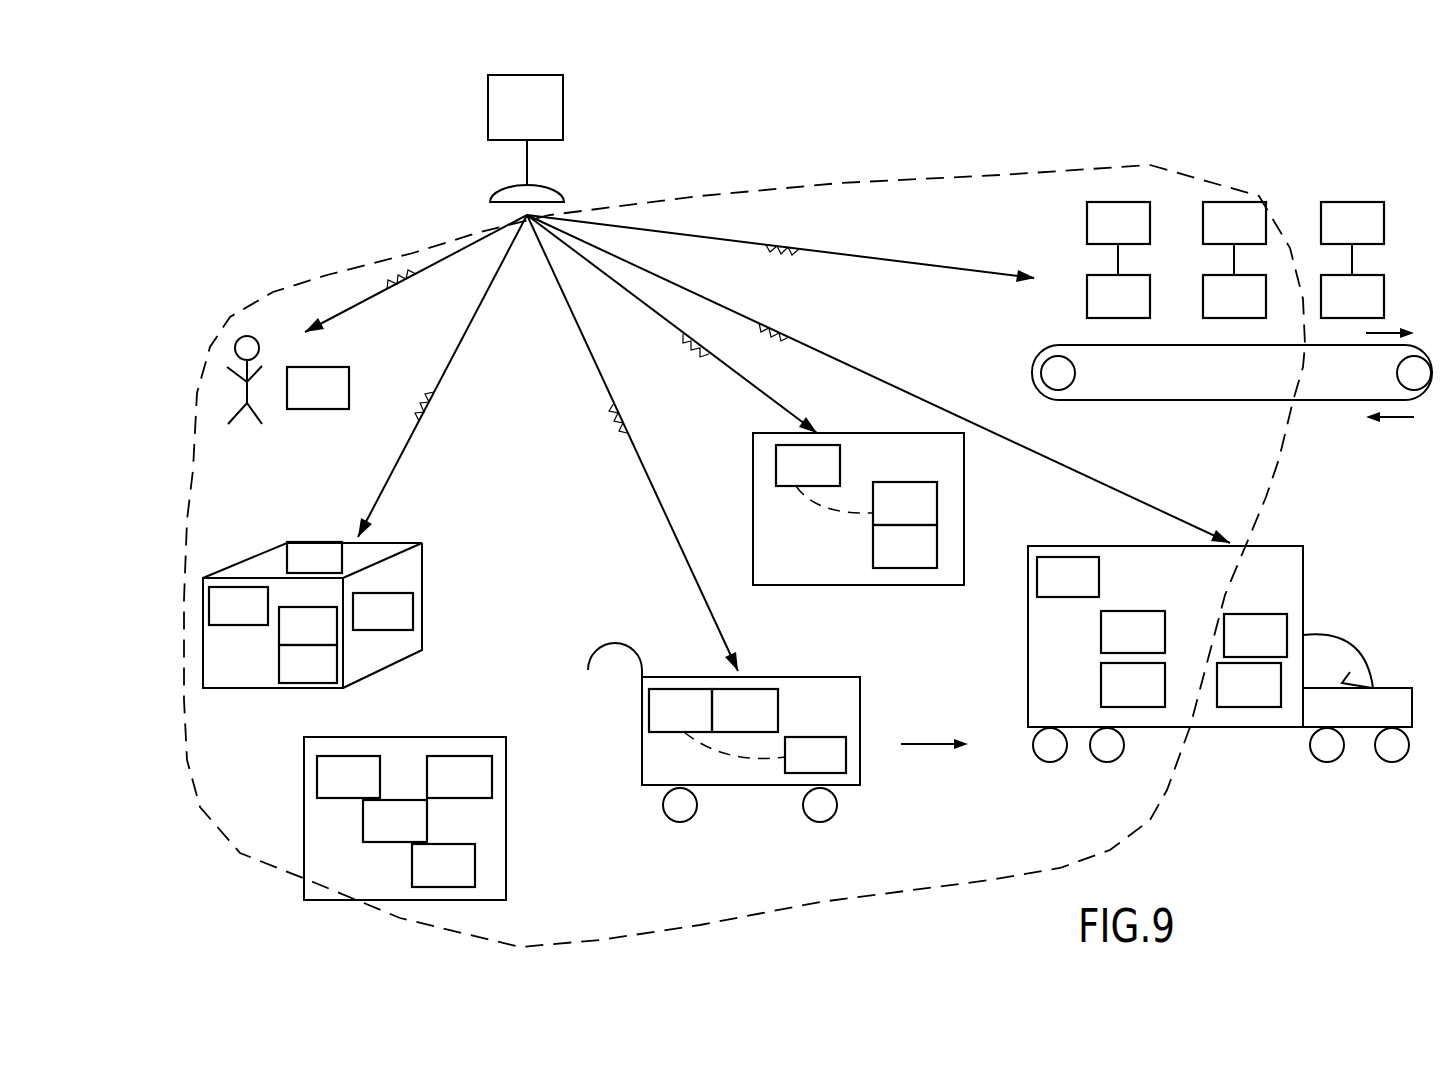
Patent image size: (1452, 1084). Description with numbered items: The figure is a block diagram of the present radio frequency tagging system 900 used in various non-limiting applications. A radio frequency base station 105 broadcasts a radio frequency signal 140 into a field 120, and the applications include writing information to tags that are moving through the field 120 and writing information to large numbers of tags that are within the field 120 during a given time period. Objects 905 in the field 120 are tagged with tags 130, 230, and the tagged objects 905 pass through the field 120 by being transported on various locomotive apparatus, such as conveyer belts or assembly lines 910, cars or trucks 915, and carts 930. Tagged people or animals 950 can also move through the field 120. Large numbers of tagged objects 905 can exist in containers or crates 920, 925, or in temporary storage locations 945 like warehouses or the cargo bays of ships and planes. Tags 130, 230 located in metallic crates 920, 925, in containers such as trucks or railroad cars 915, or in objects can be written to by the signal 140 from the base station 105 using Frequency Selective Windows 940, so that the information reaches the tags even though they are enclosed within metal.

The radio frequency base station 105 is at (596, 75).
The field of tags 120 is at (1030, 172).
The tag 130 is at (1138, 236).
The radio frequency signal 140 is at (343, 312).
The tag 230 is at (1254, 236).
The system used in various applications 900 is at (1267, 138).
The tagged objects 905 is at (1138, 310).
The conveyer belts/assembly lines 910 is at (1174, 403).
The cars/trucks 915 is at (1303, 585).
The containers/crates 920 is at (964, 502).
The containers/crates 925 is at (425, 572).
The carts 930 is at (860, 710).
The Frequency Selective Windows 940 is at (333, 569).
The temporary storage locations 945 is at (432, 737).
The tagged people or animals 950 is at (284, 432).